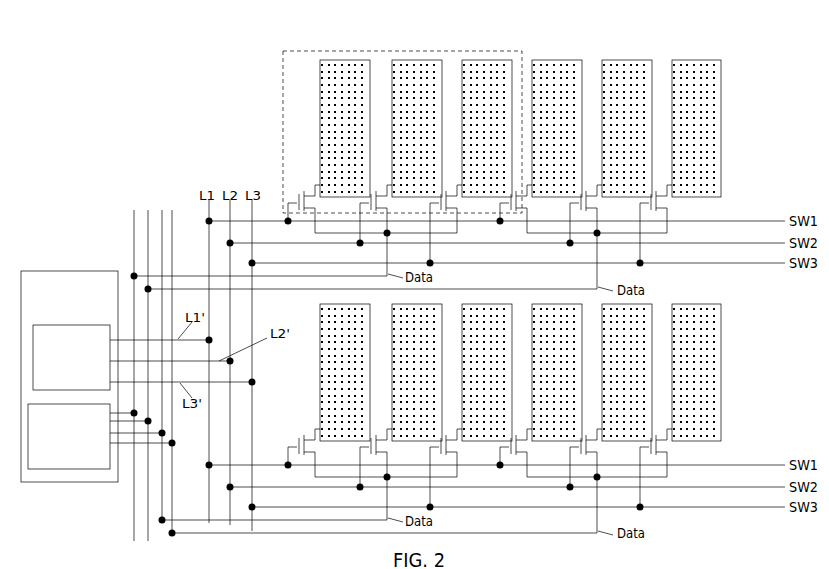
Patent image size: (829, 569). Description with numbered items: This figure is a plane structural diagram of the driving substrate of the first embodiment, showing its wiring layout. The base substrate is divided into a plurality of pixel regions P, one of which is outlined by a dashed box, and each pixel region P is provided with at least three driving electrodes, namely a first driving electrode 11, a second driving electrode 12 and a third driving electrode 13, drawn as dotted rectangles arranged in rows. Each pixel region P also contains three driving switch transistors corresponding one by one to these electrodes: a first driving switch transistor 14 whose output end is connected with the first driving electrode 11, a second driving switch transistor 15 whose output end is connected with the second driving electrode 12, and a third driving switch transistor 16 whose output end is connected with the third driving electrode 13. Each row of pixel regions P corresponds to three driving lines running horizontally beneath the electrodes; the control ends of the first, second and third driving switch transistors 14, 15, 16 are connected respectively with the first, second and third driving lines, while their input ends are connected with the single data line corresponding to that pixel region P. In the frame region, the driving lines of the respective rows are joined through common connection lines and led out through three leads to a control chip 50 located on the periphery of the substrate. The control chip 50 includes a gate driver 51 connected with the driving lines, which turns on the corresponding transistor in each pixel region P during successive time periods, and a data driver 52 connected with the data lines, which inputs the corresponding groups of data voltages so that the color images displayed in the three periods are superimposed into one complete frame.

The first driving electrode 11 is at (345, 77).
The second driving electrode 12 is at (417, 77).
The third driving electrode 13 is at (483, 77).
The first driving switch transistor 14 is at (307, 194).
The second driving switch transistor 15 is at (386, 192).
The third driving switch transistor 16 is at (456, 192).
The pixel region P is at (525, 52).
The control chip 50 is at (69, 376).
The gate driver 51 is at (71, 357).
The data driver 52 is at (69, 436).